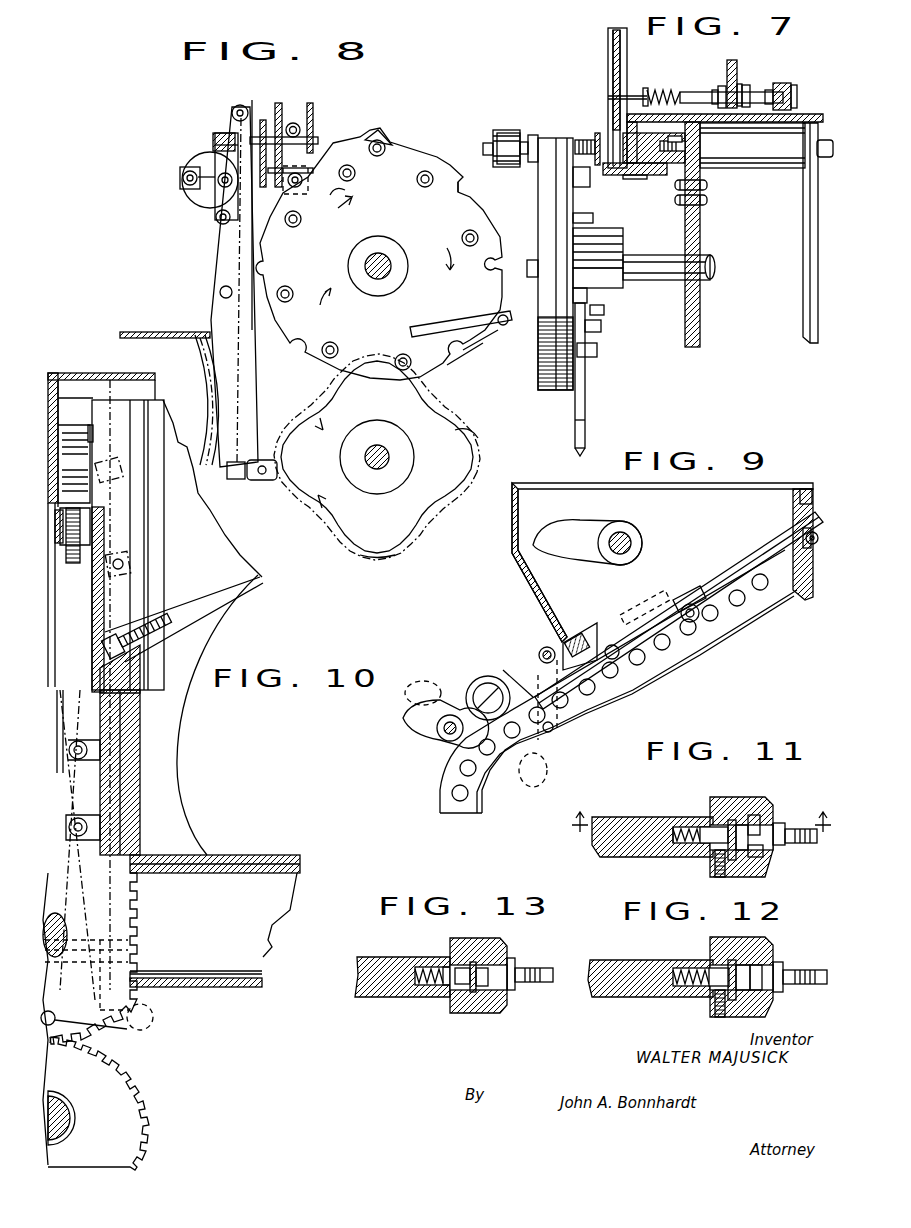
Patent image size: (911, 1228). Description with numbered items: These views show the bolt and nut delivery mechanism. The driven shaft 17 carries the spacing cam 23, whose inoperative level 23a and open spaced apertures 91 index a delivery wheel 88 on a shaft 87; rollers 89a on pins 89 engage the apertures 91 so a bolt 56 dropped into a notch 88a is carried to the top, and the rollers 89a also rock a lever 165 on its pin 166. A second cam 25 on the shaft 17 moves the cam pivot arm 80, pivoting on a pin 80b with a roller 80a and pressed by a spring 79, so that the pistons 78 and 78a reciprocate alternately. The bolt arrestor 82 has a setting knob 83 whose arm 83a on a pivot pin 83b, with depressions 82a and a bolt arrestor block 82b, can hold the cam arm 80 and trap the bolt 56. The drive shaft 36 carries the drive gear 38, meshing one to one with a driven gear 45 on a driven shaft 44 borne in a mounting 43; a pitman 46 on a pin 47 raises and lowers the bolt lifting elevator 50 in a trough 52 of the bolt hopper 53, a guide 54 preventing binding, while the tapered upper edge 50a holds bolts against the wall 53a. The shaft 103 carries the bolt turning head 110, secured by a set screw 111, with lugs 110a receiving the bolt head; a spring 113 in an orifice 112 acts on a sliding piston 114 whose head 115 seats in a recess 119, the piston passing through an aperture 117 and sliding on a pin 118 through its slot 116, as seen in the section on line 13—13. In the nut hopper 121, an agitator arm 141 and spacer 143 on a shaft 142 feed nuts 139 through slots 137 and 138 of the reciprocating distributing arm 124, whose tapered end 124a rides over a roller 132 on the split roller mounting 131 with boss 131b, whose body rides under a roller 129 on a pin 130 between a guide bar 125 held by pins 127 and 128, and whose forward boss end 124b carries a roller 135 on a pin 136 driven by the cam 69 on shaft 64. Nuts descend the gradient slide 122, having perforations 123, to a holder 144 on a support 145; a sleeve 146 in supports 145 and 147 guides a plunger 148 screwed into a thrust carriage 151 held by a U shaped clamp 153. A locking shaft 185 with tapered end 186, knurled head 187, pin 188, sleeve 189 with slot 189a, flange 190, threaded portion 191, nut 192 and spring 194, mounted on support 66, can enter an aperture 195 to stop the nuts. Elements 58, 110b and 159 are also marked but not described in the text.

In FIG. 11, the section line 13 is at (698, 834).
In FIG. 8, the driven shaft 17 is at (387, 457).
In FIG. 7, the spacing cam 23 is at (585, 435).
In FIG. 8, the spacing cam 23 is at (413, 538).
In FIG. 7, the inoperative level 23a is at (585, 400).
In FIG. 8, the inoperative level 23a is at (440, 405).
In FIG. 8, the second cam 25 is at (372, 556).
In FIG. 10, the drive shaft 36 is at (58, 1115).
In FIG. 10, the drive gear 38 is at (128, 1108).
In FIG. 10, the mounting 43 is at (203, 873).
In FIG. 10, the driven shaft 44 is at (62, 945).
In FIG. 10, the driven gear 45 is at (140, 962).
In FIG. 10, the pivoting operating arm or pitman 46 is at (140, 1017).
In FIG. 10, the pin 47 is at (84, 1030).
In FIG. 10, the sliding bolt lifting elevator 50 is at (117, 745).
In FIG. 10, the tapered upper edge 50a is at (140, 663).
In FIG. 10, the trough 52 is at (116, 823).
In FIG. 10, the bolt hopper 53 is at (140, 702).
In FIG. 10, the wall 53a is at (100, 592).
In FIG. 10, the guide 54 is at (140, 540).
In FIG. 7, the bolt 56 is at (578, 140).
In FIG. 8, the bolt 56 is at (294, 123).
In FIG. 10, the bolt 56 is at (110, 540).
In FIG. 11, the bolt 56 is at (800, 829).
In FIG. 12, the bolt 56 is at (790, 984).
In FIG. 13, the bolt 56 is at (528, 984).
In FIG. 8, the bolt 58 is at (392, 132).
In FIG. 9, the shaft 64 is at (448, 738).
In FIG. 7, the support 66 is at (732, 60).
In FIG. 9, the cam 69 is at (420, 735).
In FIG. 8, the cam operated pin or piston 78 is at (256, 108).
In FIG. 8, the cam operated pin or piston 78a is at (279, 188).
In FIG. 8, the spring 79 is at (200, 380).
In FIG. 8, the cam pivot arm 80 is at (222, 272).
In FIG. 8, the roller 80a is at (252, 482).
In FIG. 8, the pin 80b is at (220, 293).
In FIG. 8, the bolt arrestor 82 is at (200, 157).
In FIG. 8, the depressions 82a is at (216, 217).
In FIG. 8, the bolt arrestor block 82b is at (240, 105).
In FIG. 8, the setting knob 83 is at (220, 140).
In FIG. 8, the arm 83a is at (215, 146).
In FIG. 8, the pivot pin 83b is at (222, 190).
In FIG. 7, the shaft 87 is at (660, 280).
In FIG. 8, the shaft 87 is at (384, 262).
In FIG. 7, the delivery wheel 88 is at (618, 248).
In FIG. 8, the delivery wheel 88 is at (333, 148).
In FIG. 7, the spaced grooves or notches 88a is at (540, 240).
In FIG. 8, the spaced grooves or notches 88a is at (462, 192).
In FIG. 7, the pins 89 is at (610, 310).
In FIG. 8, the pins 89 is at (355, 174).
In FIG. 7, the rollers 89a is at (585, 187).
In FIG. 8, the rollers 89a is at (285, 287).
In FIG. 7, the open spaced apertures 91 is at (588, 357).
In FIG. 8, the open spaced apertures 91 is at (470, 432).
In FIG. 7, the shaft 103 is at (493, 137).
In FIG. 11, the shaft 103 is at (634, 817).
In FIG. 12, the shaft 103 is at (635, 960).
In FIG. 13, the shaft 103 is at (390, 945).
In FIG. 7, the bolt turning head 110 is at (508, 133).
In FIG. 11, the bolt turning head 110 is at (750, 797).
In FIG. 12, the bolt turning head 110 is at (745, 937).
In FIG. 13, the bolt turning head 110 is at (490, 945).
In FIG. 7, the lugs 110a is at (523, 154).
In FIG. 11, the lugs 110a is at (765, 815).
In FIG. 11, the plunger lower shoulder 110b is at (763, 855).
In FIG. 11, the set screw 111 is at (715, 875).
In FIG. 12, the set screw 111 is at (715, 1020).
In FIG. 11, the orifice 112 is at (688, 827).
In FIG. 13, the orifice 112 is at (437, 967).
In FIG. 11, the spring 113 is at (676, 845).
In FIG. 12, the spring 113 is at (690, 988).
In FIG. 13, the spring 113 is at (420, 985).
In FIG. 7, the sliding piston 114 is at (533, 135).
In FIG. 11, the sliding piston 114 is at (735, 860).
In FIG. 12, the sliding piston 114 is at (735, 960).
In FIG. 13, the sliding piston 114 is at (473, 962).
In FIG. 11, the head 115 is at (782, 823).
In FIG. 12, the head 115 is at (780, 962).
In FIG. 13, the head 115 is at (515, 962).
In FIG. 11, the slot 116 is at (725, 850).
In FIG. 12, the slot 116 is at (742, 990).
In FIG. 13, the aperture 117 is at (482, 988).
In FIG. 11, the pin 118 is at (720, 825).
In FIG. 12, the pin 118 is at (720, 968).
In FIG. 13, the pin 118 is at (462, 985).
In FIG. 12, the seat or recess 119 is at (760, 990).
In FIG. 9, the nut hopper 121 is at (545, 585).
In FIG. 7, the gradient slide or chute 122 is at (608, 72).
In FIG. 9, the gradient slide or chute 122 is at (712, 638).
In FIG. 7, the perforations 123 is at (627, 45).
In FIG. 9, the perforations 123 is at (600, 690).
In FIG. 9, the reciprocating distributing arm 124 is at (618, 635).
In FIG. 9, the tapered end 124a is at (768, 548).
In FIG. 9, the forward boss end 124b is at (467, 700).
In FIG. 9, the guide bar 125 is at (534, 770).
In FIG. 9, the pin 127 is at (556, 722).
In FIG. 9, the pin 128 is at (528, 690).
In FIG. 9, the roller 129 is at (545, 648).
In FIG. 9, the pin 130 is at (540, 655).
In FIG. 9, the split roller mounting 131 is at (808, 489).
In FIG. 9, the split boss 131b is at (829, 532).
In FIG. 9, the roller 132 is at (813, 545).
In FIG. 9, the roller 135 is at (474, 690).
In FIG. 9, the pin 136 is at (490, 672).
In FIG. 9, the slot 137 is at (645, 601).
In FIG. 9, the slot 138 is at (686, 598).
In FIG. 7, the nut 139 is at (608, 48).
In FIG. 9, the nut 139 is at (700, 608).
In FIG. 9, the agitator arm 141 is at (563, 528).
In FIG. 9, the shaft 142 is at (640, 538).
In FIG. 9, the spacer 143 is at (632, 543).
In FIG. 7, the shelf, platform or holder 144 is at (610, 175).
In FIG. 7, the support 145 is at (700, 225).
In FIG. 7, the sleeve 146 is at (752, 172).
In FIG. 7, the support 147 is at (810, 210).
In FIG. 7, the reciprocating plunger 148 is at (825, 140).
In FIG. 7, the elongated thrust carriage 151 is at (640, 145).
In FIG. 7, the U shaped clamp 153 is at (650, 180).
In FIG. 7, the washer 159 is at (673, 136).
In FIG. 8, the lever 165 is at (446, 331).
In FIG. 8, the pin 166 is at (499, 330).
In FIG. 7, the shaft 185 is at (700, 92).
In FIG. 7, the tapered end 186 is at (645, 88).
In FIG. 7, the knurled head 187 is at (796, 90).
In FIG. 7, the pin 188 is at (778, 83).
In FIG. 7, the sleeve 189 is at (747, 88).
In FIG. 7, the slot 189a is at (770, 90).
In FIG. 7, the flange 190 is at (740, 84).
In FIG. 7, the threaded portion 191 is at (714, 90).
In FIG. 7, the nut 192 is at (722, 86).
In FIG. 7, the spring 194 is at (668, 82).
In FIG. 7, the aperture 195 is at (608, 96).